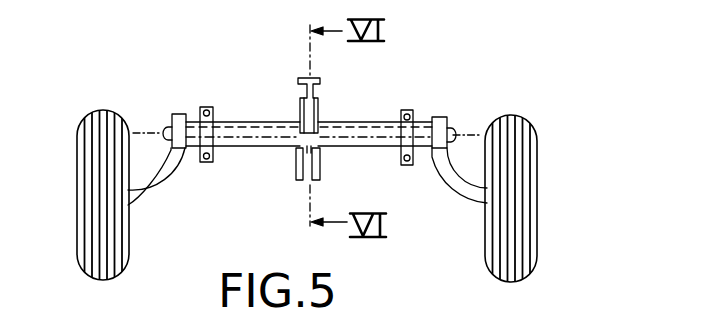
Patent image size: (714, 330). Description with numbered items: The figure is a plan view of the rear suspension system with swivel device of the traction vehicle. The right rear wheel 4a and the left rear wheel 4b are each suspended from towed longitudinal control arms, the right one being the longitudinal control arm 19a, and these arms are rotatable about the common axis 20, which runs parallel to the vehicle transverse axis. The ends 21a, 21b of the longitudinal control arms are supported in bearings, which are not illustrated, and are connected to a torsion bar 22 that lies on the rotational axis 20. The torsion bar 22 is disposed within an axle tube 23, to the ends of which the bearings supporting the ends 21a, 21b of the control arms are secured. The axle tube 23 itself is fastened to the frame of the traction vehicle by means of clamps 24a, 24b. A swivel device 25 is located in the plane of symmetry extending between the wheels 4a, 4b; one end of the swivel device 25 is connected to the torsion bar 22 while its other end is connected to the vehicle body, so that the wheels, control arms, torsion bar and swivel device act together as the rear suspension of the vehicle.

The right rear wheel 4a is at (527, 168).
The left rear wheel 4b is at (83, 132).
The longitudinal control arm 19a is at (452, 190).
The common axis 20 is at (480, 133).
The end of longitudinal control arm 21a is at (440, 116).
The end of longitudinal control arm 21b is at (175, 113).
The torsion bar 22 is at (375, 121).
The axle tube 23 is at (238, 121).
The clamp 24a is at (413, 166).
The clamp 24b is at (213, 163).
The swivel device 25 is at (303, 78).